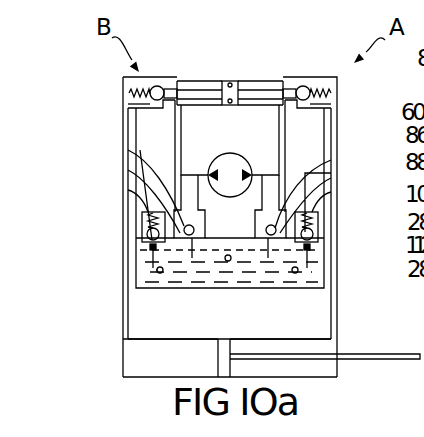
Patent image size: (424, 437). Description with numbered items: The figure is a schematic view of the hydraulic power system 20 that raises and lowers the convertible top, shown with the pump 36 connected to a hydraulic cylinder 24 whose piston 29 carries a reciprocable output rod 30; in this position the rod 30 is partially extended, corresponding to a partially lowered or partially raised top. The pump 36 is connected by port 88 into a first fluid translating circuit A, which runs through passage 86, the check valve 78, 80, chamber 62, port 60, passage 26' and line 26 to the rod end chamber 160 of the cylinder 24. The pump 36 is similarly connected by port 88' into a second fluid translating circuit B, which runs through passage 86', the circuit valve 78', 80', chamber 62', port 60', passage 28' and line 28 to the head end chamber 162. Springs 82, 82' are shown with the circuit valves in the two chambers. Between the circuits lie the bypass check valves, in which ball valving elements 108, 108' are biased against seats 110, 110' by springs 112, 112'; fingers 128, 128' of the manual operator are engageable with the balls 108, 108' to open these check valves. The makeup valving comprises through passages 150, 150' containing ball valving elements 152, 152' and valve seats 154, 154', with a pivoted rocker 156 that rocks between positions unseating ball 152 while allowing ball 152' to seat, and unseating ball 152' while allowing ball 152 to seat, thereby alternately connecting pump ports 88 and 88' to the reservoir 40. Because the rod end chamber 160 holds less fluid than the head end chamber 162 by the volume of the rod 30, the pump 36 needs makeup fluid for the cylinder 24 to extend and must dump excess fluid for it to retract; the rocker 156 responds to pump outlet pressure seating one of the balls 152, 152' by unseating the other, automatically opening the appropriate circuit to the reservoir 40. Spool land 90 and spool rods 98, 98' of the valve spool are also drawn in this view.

The hydraulic power system 20 is at (118, 378).
The hydraulic cylinder 24 is at (162, 378).
The hydraulic fluid translating line 26 is at (331, 227).
The passage 26' is at (216, 227).
The hydraulic fluid translating line 28 is at (206, 315).
The passage 28' is at (205, 223).
The piston 29 is at (218, 359).
The output rod 30 is at (365, 354).
The pump 36 is at (228, 152).
The reservoir 40 is at (336, 282).
The port 60 is at (349, 112).
The port 60' is at (115, 114).
The chamber 62 is at (336, 83).
The chamber 62' is at (127, 84).
The check valve 78 is at (303, 52).
The circuit valve 78' is at (183, 52).
The check valve 80 is at (322, 63).
The circuit valve 80' is at (157, 64).
The spring 82 is at (348, 92).
The spring 82' is at (115, 94).
The passage 86 is at (303, 160).
The passage 86' is at (156, 160).
The pump port 88 is at (302, 156).
The pump port 88' is at (156, 156).
The spool land 90 is at (236, 80).
The spool rod 98 is at (268, 66).
The spool rod 98' is at (207, 66).
The ball valving element 108 is at (344, 239).
The ball valving element 108' is at (114, 227).
The seat 110 is at (341, 258).
The seat 110' is at (113, 253).
The spring 112 is at (341, 224).
The spring 112' is at (119, 216).
The finger 128 is at (276, 250).
The finger 128' is at (171, 250).
The through passage 150 is at (333, 185).
The through passage 150' is at (127, 175).
The ball valving element 152 is at (335, 198).
The ball valving element 152' is at (125, 194).
The valve seat 154 is at (351, 199).
The valve seat 154' is at (109, 190).
The rocker 156 is at (228, 262).
The rod end cylinder chamber 160 is at (318, 372).
The head end chamber 162 is at (134, 352).